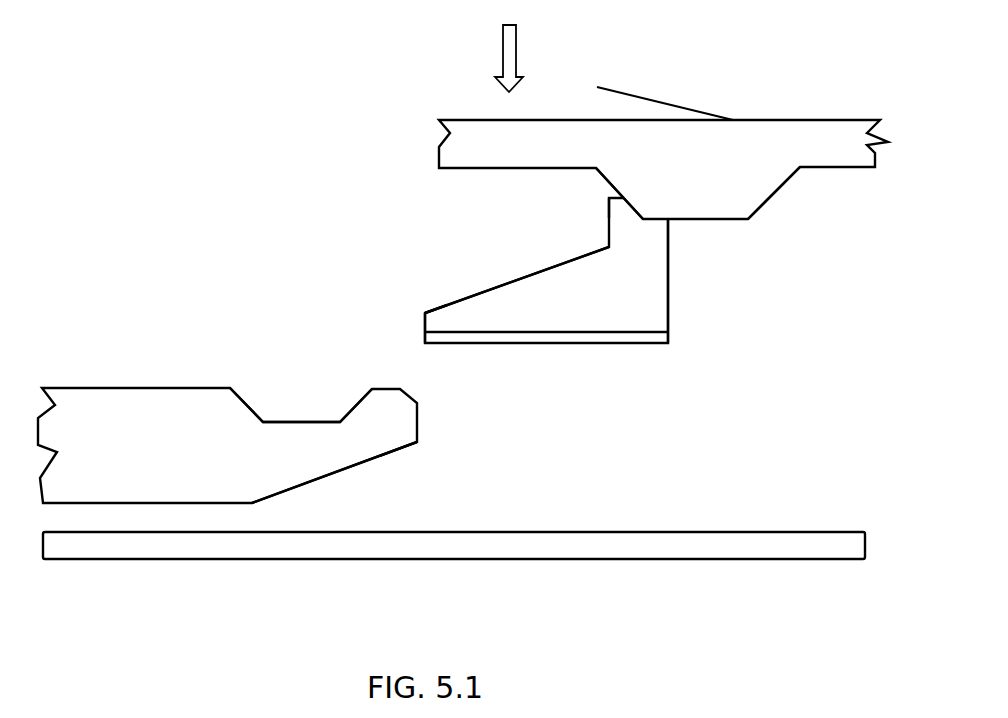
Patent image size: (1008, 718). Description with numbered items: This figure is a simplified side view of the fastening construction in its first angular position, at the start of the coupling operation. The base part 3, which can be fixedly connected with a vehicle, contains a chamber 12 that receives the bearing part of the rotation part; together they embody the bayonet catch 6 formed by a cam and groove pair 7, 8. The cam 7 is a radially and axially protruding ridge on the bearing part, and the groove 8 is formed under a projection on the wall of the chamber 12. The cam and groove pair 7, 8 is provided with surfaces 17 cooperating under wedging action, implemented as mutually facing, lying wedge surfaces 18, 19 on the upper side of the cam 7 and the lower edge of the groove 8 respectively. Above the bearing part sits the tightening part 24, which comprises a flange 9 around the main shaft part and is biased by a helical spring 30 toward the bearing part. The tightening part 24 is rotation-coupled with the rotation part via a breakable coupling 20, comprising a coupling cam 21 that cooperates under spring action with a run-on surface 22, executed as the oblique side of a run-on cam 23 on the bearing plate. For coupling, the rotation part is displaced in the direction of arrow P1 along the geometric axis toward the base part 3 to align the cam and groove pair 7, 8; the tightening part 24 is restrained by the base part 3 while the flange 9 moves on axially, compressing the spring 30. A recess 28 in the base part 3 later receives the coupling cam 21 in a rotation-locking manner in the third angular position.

The base part 3 is at (634, 514).
The bayonet catch 6 is at (447, 305).
The cam 7 is at (532, 306).
The groove 8 is at (380, 512).
The flange 9 is at (663, 129).
The chamber 12 is at (454, 556).
The surfaces cooperating under wedging action 17 is at (516, 275).
The wedge surface of cam 18 is at (523, 277).
The wedge surface of groove 19 is at (305, 483).
The breakable coupling 20 is at (682, 233).
The coupling cam 21 is at (742, 193).
The run-on surface 22 is at (640, 214).
The run-on cam 23 is at (622, 208).
The tightening part 24 is at (842, 142).
The recess 28 is at (298, 422).
The spring 30 is at (660, 102).
The arrow P1 is at (500, 50).